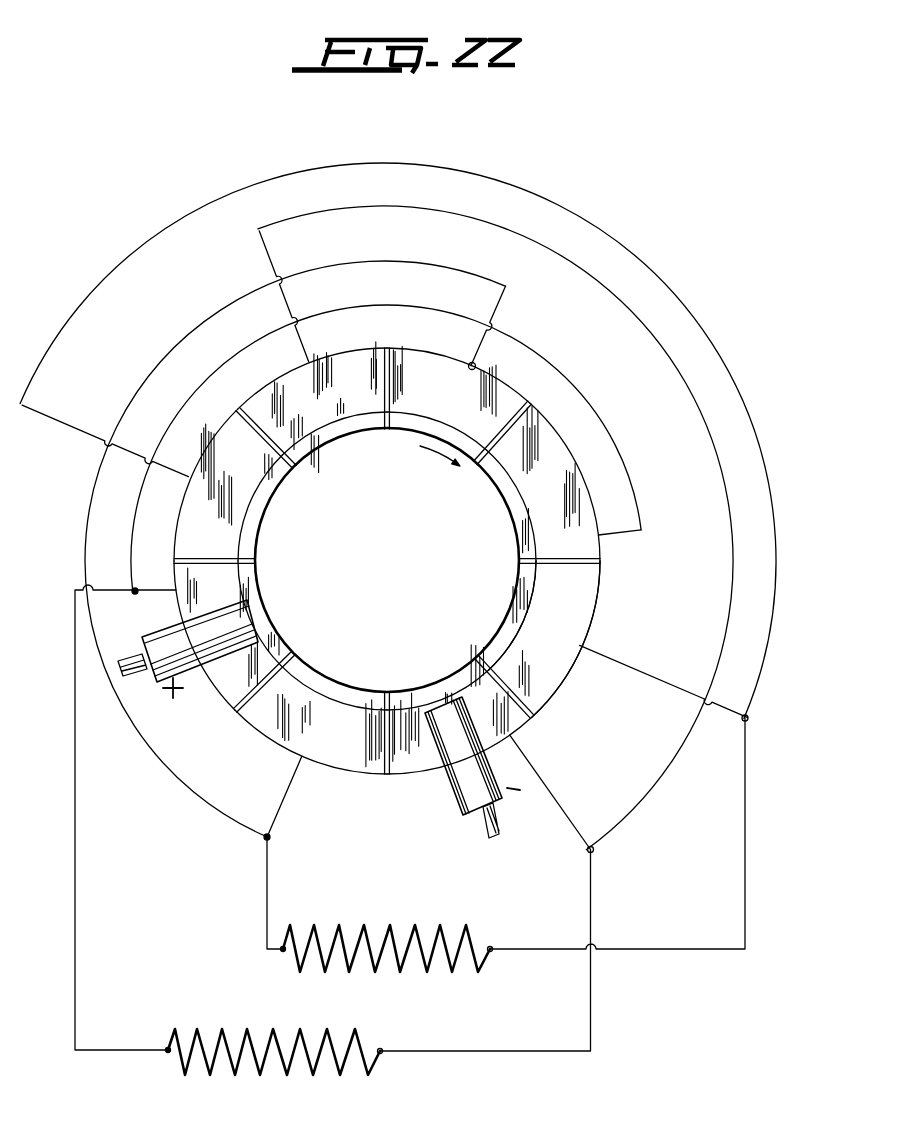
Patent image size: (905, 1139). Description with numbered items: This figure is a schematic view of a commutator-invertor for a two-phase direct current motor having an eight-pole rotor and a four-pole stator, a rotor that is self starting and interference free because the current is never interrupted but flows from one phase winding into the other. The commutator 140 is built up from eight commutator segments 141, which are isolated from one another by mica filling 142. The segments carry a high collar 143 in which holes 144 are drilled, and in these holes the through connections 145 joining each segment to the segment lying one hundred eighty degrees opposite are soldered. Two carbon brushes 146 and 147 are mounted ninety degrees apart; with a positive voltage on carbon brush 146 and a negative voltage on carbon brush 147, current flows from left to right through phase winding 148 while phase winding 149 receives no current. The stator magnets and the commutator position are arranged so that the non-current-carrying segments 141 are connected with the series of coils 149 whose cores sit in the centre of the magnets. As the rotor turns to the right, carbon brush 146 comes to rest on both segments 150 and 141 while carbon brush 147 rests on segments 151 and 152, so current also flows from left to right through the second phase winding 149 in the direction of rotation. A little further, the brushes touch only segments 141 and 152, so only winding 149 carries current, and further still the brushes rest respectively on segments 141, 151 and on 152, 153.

The commutator 140 is at (365, 434).
The commutator segments 141 is at (311, 455).
The mica filling 142 is at (487, 667).
The high collar 143 is at (493, 410).
The holes 144 is at (477, 368).
The through connections 145 is at (430, 259).
The carbon brush 146 is at (163, 642).
The carbon brush 147 is at (473, 788).
The phase winding 148 is at (222, 1030).
The phase winding 149 is at (363, 928).
The segment 150 is at (253, 613).
The segment 151 is at (432, 695).
The segment 152 is at (512, 604).
The segment 153 is at (517, 505).